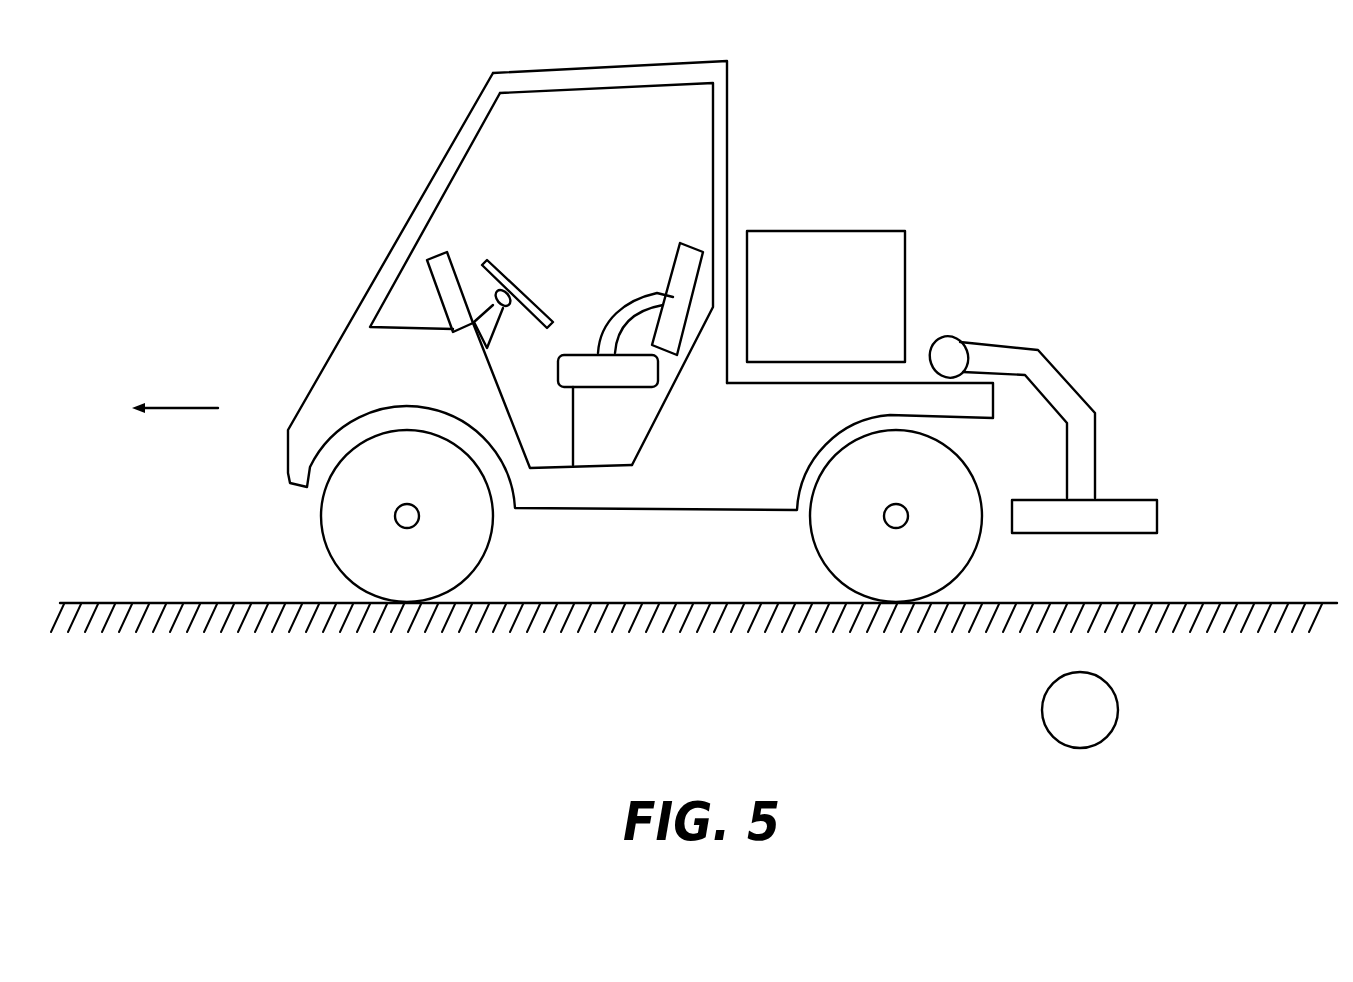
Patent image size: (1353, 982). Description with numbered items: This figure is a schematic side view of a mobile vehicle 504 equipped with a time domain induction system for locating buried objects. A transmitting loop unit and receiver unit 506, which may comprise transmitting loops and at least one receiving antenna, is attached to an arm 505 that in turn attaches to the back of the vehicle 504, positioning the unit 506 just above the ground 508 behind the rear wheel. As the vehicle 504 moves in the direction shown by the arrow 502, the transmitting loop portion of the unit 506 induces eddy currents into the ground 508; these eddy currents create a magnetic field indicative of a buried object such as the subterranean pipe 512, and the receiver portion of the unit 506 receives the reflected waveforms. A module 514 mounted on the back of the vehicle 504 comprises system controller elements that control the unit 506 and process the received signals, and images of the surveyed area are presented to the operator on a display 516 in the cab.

The arrow 502 is at (175, 425).
The mobile vehicle 504 is at (296, 150).
The arm 505 is at (1047, 358).
The transmitting loop unit and receiver unit 506 is at (1157, 517).
The ground 508 is at (1260, 602).
The subterranean pipe 512 is at (1043, 708).
The module 514 is at (828, 230).
The display 516 is at (447, 253).